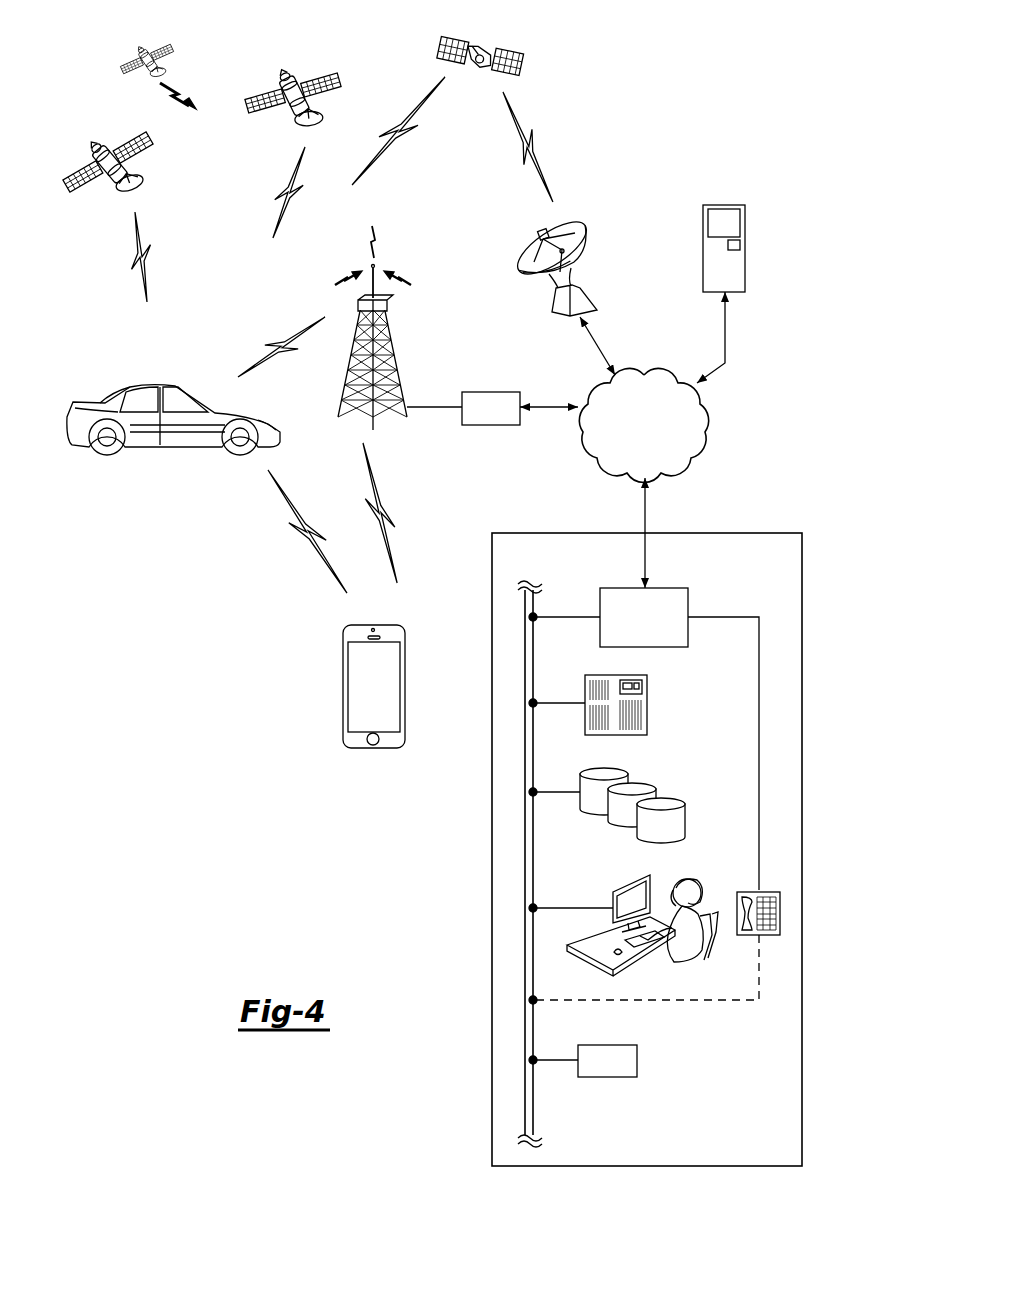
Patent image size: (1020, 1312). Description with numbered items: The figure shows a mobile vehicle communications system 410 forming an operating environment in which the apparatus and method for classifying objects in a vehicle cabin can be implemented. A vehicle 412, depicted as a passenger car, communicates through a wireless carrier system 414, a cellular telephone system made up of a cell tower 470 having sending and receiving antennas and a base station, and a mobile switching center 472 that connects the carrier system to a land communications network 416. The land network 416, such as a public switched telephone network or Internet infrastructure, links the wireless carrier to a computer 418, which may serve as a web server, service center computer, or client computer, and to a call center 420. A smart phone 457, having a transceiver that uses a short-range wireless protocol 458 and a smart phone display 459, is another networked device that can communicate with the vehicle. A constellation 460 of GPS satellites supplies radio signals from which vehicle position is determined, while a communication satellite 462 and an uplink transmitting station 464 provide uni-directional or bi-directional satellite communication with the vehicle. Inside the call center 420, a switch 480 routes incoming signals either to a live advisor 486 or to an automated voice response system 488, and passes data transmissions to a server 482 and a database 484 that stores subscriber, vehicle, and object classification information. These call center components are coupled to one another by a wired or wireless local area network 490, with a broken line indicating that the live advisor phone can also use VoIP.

The mobile vehicle communications system 410 is at (670, 78).
The vehicle 412 is at (92, 402).
The wireless carrier system 414 is at (340, 430).
The land communications network 416 is at (643, 425).
The computer 418 is at (785, 242).
The call center 420 is at (623, 1202).
The smart phone 457 is at (343, 686).
The short-range wireless protocol 458 is at (280, 488).
The smart phone display 459 is at (305, 653).
The constellation of GPS satellites 460 is at (323, 162).
The communication satellite 462 is at (505, 28).
The uplink transmitting station 464 is at (605, 272).
The cell tower 470 is at (415, 330).
The mobile switching center 472 is at (492, 408).
The switch 480 is at (646, 794).
The server 482 is at (683, 720).
The database 484 is at (697, 790).
The live advisor 486 is at (718, 862).
The automated voice response system 488 is at (585, 1061).
The local area network 490 is at (568, 1115).